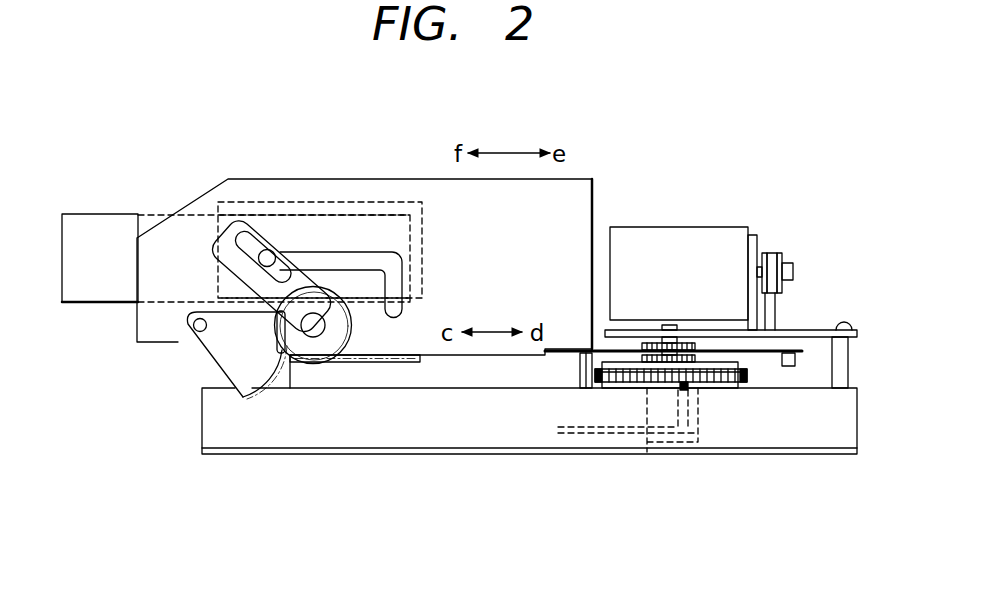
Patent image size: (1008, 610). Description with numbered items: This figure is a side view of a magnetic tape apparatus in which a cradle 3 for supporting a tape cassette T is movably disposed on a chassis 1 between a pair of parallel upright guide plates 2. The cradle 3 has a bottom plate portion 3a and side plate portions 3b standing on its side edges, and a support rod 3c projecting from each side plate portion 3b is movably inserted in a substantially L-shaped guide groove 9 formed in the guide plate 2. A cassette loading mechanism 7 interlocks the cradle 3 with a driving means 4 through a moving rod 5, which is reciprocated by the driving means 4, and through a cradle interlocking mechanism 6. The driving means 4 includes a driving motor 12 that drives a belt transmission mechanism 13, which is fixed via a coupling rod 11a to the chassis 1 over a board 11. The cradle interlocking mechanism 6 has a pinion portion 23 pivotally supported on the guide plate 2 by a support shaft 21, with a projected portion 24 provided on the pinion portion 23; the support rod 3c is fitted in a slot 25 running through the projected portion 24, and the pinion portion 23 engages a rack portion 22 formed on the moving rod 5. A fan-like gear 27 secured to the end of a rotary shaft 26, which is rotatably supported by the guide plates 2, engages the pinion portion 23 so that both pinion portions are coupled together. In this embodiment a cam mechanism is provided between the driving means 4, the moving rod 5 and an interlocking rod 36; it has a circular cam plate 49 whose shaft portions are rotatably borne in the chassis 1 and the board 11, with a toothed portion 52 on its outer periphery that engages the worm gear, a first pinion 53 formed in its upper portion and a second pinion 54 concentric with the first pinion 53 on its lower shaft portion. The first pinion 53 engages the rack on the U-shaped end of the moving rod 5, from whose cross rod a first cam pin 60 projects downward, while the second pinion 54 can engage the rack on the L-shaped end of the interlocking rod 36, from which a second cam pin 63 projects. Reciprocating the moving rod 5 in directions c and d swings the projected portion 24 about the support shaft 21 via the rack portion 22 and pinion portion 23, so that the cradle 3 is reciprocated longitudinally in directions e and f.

The tape cassette T is at (89, 228).
The chassis 1 is at (463, 433).
The guide plate 2 is at (578, 188).
The cradle 3 is at (374, 190).
The bottom plate portion 3a is at (420, 303).
The side plate portion 3b is at (422, 228).
The support rod 3c is at (268, 256).
The driving means 4 is at (774, 191).
The moving rod 5 is at (524, 373).
The cradle interlocking mechanism 6 is at (108, 366).
The cassette loading mechanism 7 is at (677, 205).
The guide groove 9 is at (366, 253).
The board 11 is at (808, 331).
The coupling rod 11a is at (845, 364).
The driving motor 12 is at (715, 237).
The belt transmission mechanism 13 is at (769, 255).
The support shaft 21 is at (313, 338).
The rack portion 22 is at (400, 363).
The pinion portion 23 is at (352, 327).
The projected portion 24 is at (213, 258).
The slot 25 is at (247, 230).
The rotary shaft 26 is at (188, 340).
The fan-like gear 27 is at (272, 383).
The interlocking rod 36 is at (596, 434).
The circular cam plate 49 is at (614, 362).
The toothed portion 52 is at (745, 376).
The first pinion 53 is at (690, 348).
The second pinion 54 is at (641, 438).
The first cam pin 60 is at (788, 368).
The second cam pin 63 is at (688, 416).